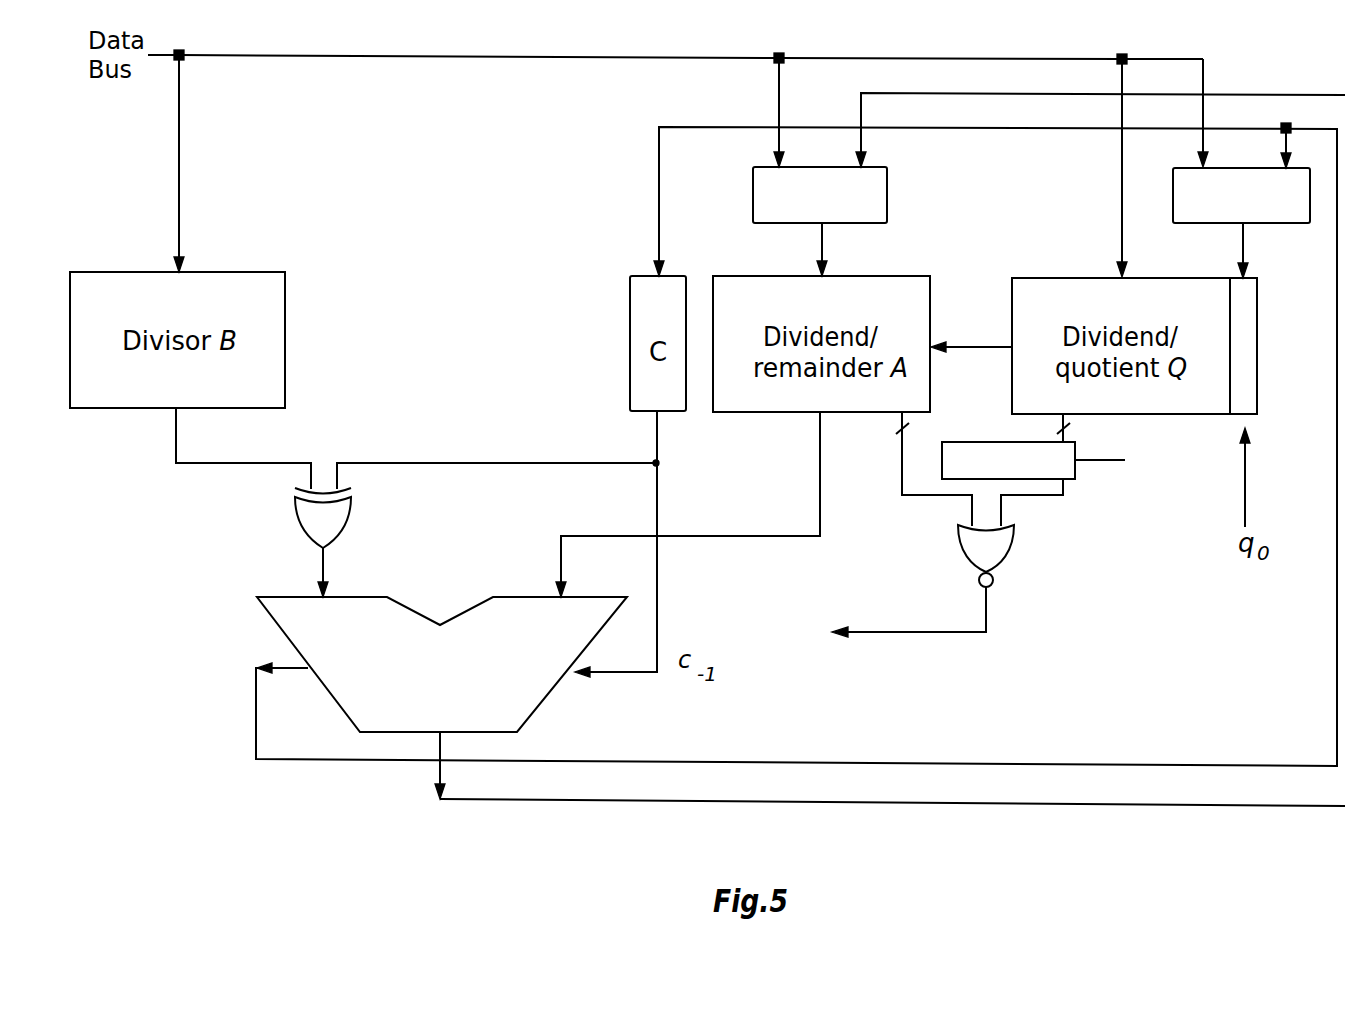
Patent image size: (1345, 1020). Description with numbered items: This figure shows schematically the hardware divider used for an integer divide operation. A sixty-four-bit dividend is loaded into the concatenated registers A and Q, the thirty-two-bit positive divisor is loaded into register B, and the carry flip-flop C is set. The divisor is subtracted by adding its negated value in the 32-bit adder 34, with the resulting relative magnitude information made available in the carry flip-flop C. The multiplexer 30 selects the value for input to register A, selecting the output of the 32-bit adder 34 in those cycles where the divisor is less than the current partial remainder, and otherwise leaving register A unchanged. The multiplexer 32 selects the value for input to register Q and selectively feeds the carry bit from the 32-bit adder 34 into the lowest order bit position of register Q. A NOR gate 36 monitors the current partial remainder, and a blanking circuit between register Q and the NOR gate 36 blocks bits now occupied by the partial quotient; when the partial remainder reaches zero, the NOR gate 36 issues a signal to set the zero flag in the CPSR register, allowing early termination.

The multiplexer 30 is at (887, 184).
The multiplexer 32 is at (1173, 195).
The 32-bit adder 34 is at (500, 733).
The NOR gate 36 is at (1013, 532).